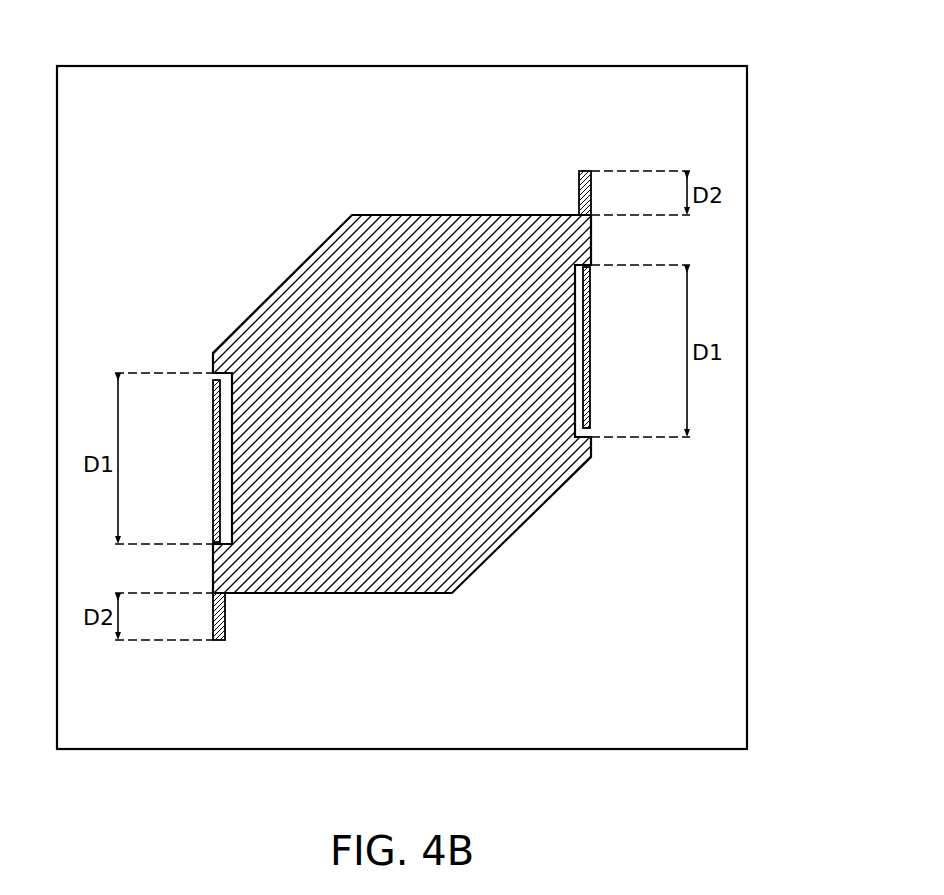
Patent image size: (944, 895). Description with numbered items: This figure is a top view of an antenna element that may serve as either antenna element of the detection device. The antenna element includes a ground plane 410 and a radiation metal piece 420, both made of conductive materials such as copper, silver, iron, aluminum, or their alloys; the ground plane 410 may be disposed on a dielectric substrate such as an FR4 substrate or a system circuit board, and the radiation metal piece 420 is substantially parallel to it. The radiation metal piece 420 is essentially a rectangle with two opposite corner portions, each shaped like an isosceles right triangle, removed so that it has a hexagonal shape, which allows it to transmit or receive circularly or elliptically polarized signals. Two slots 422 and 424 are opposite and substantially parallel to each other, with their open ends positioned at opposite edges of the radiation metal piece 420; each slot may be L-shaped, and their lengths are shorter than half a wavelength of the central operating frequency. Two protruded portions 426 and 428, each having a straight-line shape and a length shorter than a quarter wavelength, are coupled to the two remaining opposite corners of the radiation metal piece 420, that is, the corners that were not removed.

The ground plane 410 is at (487, 82).
The radiation metal piece 420 is at (346, 583).
The slot 422 is at (213, 465).
The slot 424 is at (580, 344).
The protruded portion 426 is at (213, 620).
The protruded portion 428 is at (592, 187).